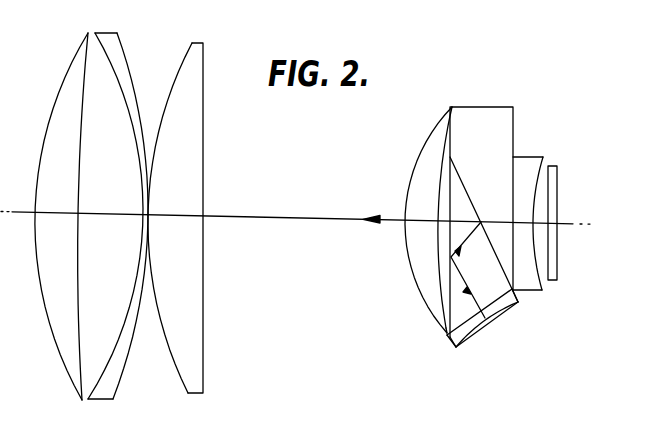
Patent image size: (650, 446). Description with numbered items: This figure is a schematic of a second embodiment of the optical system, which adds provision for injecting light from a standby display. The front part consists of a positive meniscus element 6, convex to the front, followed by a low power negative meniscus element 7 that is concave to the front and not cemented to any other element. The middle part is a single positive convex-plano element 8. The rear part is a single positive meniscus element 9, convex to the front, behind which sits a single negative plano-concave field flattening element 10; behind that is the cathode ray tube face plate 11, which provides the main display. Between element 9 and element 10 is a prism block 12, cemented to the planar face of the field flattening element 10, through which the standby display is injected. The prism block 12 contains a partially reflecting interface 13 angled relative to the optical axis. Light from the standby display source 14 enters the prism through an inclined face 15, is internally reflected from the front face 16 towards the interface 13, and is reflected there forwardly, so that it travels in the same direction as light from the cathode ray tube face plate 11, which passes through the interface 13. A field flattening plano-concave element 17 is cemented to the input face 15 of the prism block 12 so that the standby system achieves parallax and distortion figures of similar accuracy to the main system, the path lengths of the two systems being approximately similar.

The positive meniscus element 6 is at (75, 78).
The low power negative meniscus element 7 is at (112, 50).
The positive convex-plano element 8 is at (188, 72).
The positive meniscus element 9 is at (435, 133).
The negative plano-concave field flattening element 10 is at (527, 157).
The cathode ray tube face plate 11 is at (558, 188).
The prism block 12 is at (482, 122).
The partially reflecting interface 13 is at (463, 187).
The standby display source 14 is at (495, 323).
The inclined face 15 is at (455, 348).
The front face 16 is at (445, 317).
The field flattening plano-concave element 17 is at (520, 300).